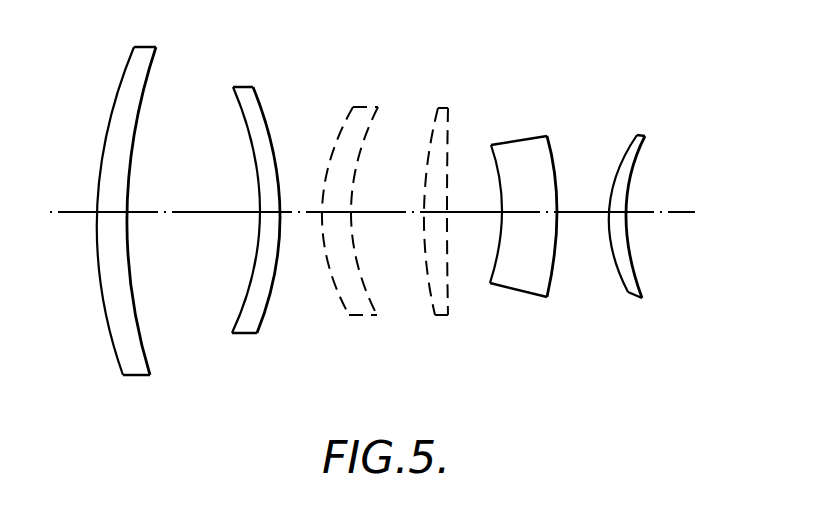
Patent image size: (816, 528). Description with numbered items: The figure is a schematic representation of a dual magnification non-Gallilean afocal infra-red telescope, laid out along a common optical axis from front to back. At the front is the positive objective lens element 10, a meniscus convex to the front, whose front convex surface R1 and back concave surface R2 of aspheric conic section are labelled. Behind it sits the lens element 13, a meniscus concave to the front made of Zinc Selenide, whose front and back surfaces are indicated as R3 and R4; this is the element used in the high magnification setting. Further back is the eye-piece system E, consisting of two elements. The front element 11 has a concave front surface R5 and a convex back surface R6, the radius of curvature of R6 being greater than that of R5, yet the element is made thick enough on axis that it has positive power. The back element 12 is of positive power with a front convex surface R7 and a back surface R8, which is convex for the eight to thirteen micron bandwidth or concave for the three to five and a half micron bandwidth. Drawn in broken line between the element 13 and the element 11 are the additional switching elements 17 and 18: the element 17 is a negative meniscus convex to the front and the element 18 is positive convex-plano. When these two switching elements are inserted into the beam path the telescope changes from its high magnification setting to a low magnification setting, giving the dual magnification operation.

The front positive objective lens element 10 is at (135, 370).
The lens element 13 is at (246, 326).
The switching element 17 is at (362, 318).
The switching element 18 is at (440, 318).
The front element of eye-piece system 11 is at (524, 283).
The back element of eye-piece system 12 is at (628, 285).
The eye-piece system E is at (483, 62).
The front convex surface R1 is at (114, 96).
The back concave surface R2 is at (149, 74).
The front surface of switching element 13 R3 is at (243, 115).
The back surface of switching element 13 R4 is at (266, 122).
The concave front surface R5 is at (487, 155).
The convex back surface R6 is at (550, 145).
The front convex surface R7 is at (623, 158).
The back surface R8 is at (634, 167).